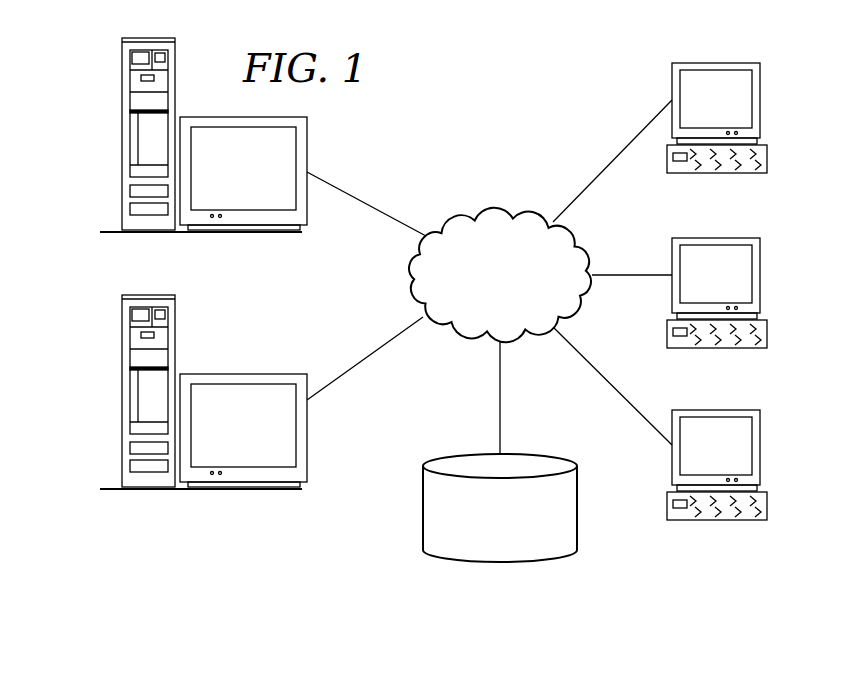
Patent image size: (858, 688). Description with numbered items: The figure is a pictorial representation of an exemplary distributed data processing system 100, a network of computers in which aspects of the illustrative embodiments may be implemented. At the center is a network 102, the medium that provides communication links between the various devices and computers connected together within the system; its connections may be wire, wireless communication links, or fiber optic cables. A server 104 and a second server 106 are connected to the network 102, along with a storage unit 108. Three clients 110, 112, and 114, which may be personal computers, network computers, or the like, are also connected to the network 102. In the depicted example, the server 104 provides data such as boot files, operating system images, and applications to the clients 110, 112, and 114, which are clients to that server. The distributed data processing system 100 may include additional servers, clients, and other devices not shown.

The distributed data processing system 100 is at (564, 75).
The network 102 is at (465, 216).
The server 104 is at (122, 140).
The server 106 is at (122, 392).
The storage unit 108 is at (478, 559).
The client 110 is at (761, 100).
The client 112 is at (761, 275).
The client 114 is at (761, 445).